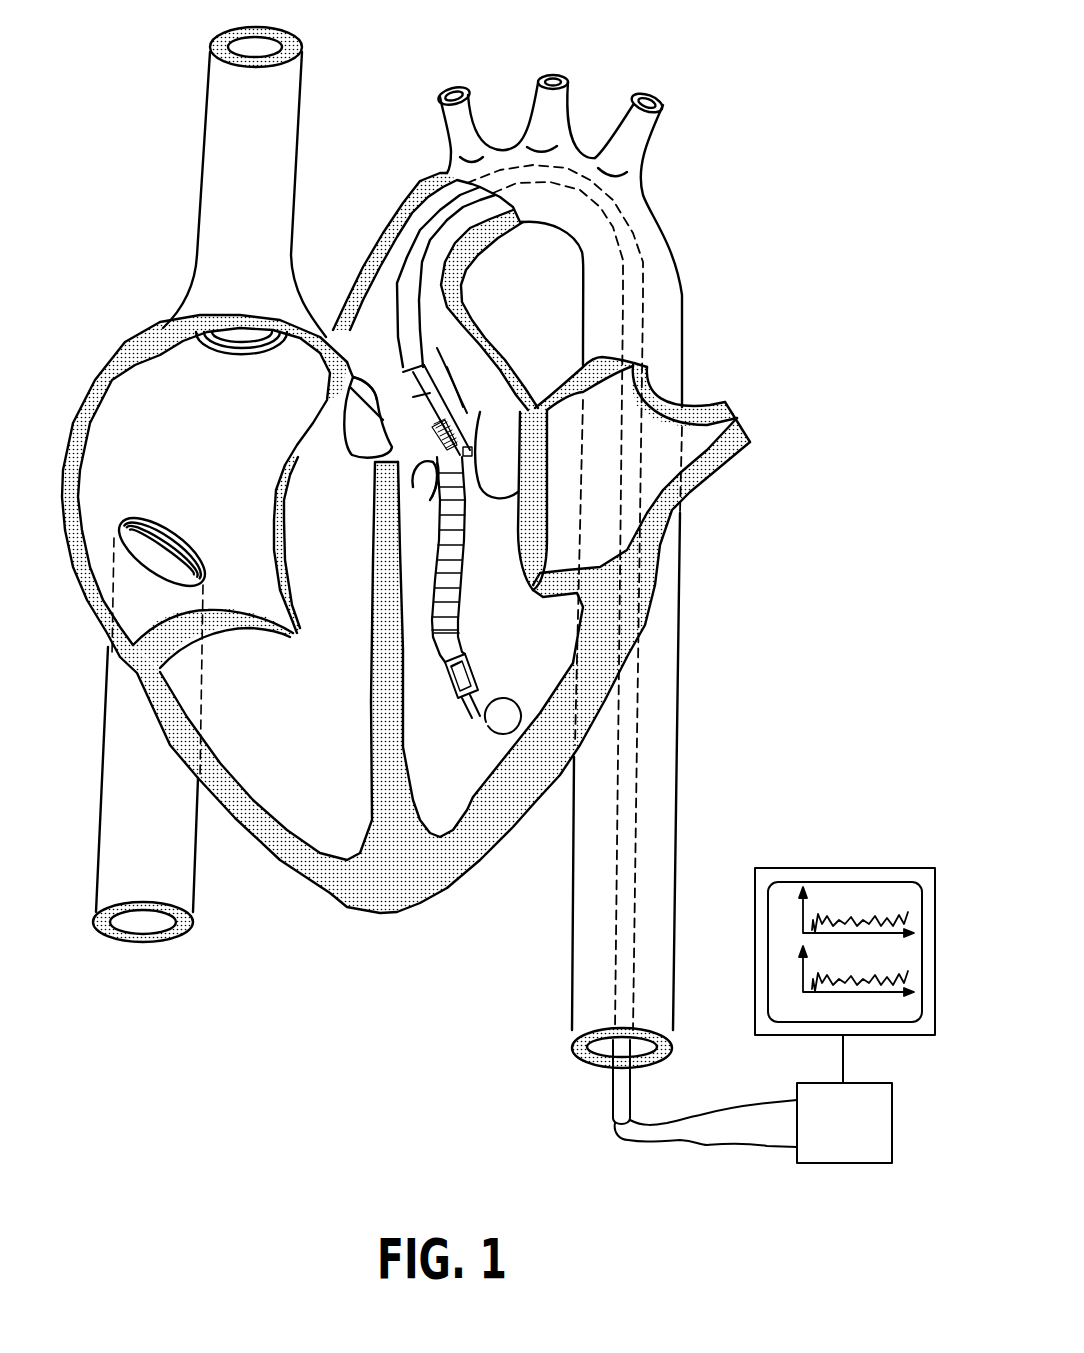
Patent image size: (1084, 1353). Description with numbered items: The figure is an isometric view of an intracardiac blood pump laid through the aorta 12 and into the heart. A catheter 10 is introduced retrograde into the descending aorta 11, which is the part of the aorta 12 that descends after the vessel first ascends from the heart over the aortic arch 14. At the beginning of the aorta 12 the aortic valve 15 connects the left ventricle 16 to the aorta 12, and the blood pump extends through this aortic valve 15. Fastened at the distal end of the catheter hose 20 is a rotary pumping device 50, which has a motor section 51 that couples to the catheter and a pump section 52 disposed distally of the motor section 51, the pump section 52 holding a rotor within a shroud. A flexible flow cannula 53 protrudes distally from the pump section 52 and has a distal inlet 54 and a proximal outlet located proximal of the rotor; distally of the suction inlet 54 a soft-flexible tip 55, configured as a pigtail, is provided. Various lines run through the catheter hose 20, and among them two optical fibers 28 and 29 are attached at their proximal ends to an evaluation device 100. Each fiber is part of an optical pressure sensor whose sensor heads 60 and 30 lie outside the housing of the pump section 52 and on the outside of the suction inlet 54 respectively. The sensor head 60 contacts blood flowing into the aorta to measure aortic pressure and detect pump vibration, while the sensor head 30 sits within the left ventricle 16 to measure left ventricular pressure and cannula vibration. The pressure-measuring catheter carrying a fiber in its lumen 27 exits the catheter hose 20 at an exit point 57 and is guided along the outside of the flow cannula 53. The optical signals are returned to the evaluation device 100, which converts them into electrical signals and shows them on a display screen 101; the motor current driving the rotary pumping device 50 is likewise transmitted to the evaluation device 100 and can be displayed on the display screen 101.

The catheter 10 is at (624, 699).
The descending aorta 11 is at (433, 484).
The aorta 12 is at (697, 210).
The aortic arch 14 is at (407, 203).
The aortic valve 15 is at (487, 484).
The left ventricle 16 is at (443, 748).
The catheter hose 20 is at (625, 1103).
The lumen 27 is at (430, 640).
The optical fiber 28 is at (755, 1103).
The optical fiber 29 is at (752, 1147).
The sensor head 30 is at (450, 670).
The rotary pumping device 50 is at (430, 557).
The motor section 51 is at (427, 413).
The pump section 52 is at (437, 463).
The flow cannula 53 is at (418, 572).
The distal inlet 54 is at (429, 695).
The soft-flexible tip 55 is at (484, 720).
The exit point 57 is at (404, 366).
The sensor head 60 is at (445, 364).
The evaluation device 100 is at (862, 1155).
The display screen 101 is at (858, 888).